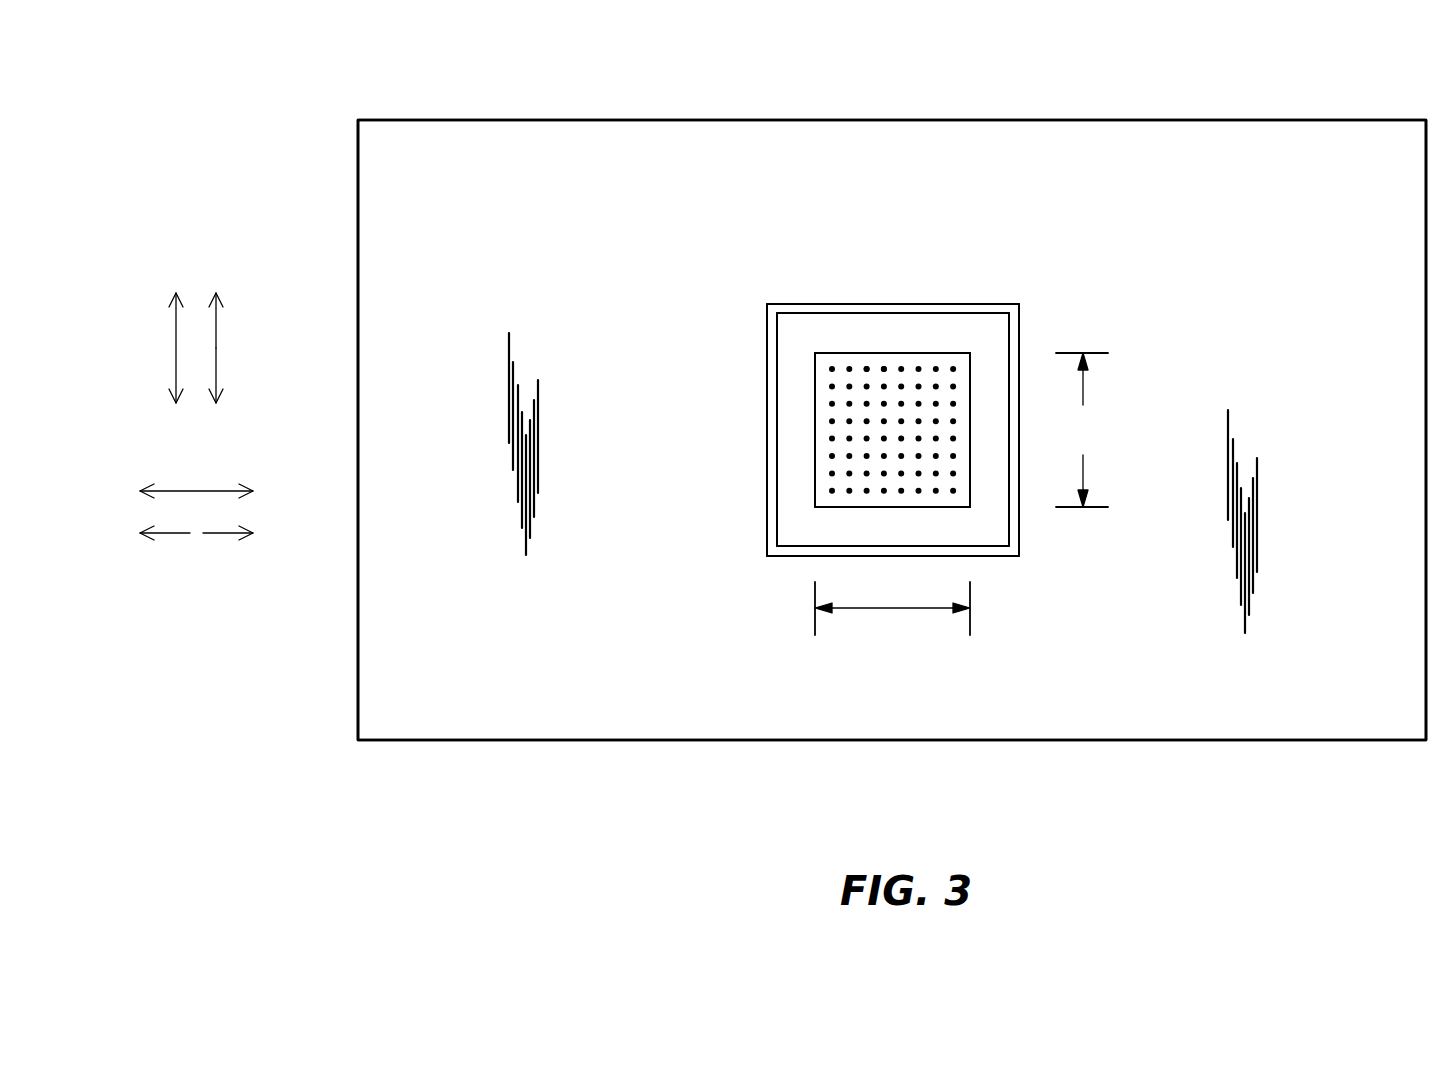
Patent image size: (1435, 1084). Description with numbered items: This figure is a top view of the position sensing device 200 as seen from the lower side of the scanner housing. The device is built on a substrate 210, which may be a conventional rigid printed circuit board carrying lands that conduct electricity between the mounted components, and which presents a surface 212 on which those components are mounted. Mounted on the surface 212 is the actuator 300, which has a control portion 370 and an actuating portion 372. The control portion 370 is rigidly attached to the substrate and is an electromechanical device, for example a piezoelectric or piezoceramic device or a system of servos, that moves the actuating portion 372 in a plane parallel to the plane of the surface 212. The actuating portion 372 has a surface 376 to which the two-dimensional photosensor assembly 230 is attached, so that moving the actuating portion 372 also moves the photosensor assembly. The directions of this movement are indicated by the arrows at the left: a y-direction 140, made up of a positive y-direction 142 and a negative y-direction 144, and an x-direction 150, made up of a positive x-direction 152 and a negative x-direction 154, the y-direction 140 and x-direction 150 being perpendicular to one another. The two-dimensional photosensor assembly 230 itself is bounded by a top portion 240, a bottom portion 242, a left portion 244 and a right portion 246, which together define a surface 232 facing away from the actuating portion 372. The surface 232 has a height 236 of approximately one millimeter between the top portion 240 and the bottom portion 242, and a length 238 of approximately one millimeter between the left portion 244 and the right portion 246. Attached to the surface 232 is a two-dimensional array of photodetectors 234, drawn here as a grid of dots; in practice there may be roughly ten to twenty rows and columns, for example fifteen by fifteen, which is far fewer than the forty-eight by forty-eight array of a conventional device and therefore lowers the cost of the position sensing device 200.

The position sensing device 200 is at (1153, 93).
The substrate 210 is at (358, 172).
The surface 212 is at (518, 241).
The y-direction 140 is at (176, 345).
The positive y-direction 142 is at (216, 328).
The negative y-direction 144 is at (216, 365).
The x-direction 150 is at (193, 490).
The positive x-direction 152 is at (215, 535).
The negative x-direction 154 is at (178, 535).
The actuator 300 is at (793, 302).
The control portion 370 is at (1003, 304).
The actuating portion 372 is at (777, 333).
The surface 376 is at (797, 524).
The two-dimensional photosensor assembly 230 is at (815, 497).
The surface 232 is at (823, 466).
The photodetectors 234 is at (867, 369).
The height 236 is at (1083, 430).
The length 238 is at (893, 609).
The top portion 240 is at (930, 352).
The bottom portion 242 is at (950, 510).
The left portion 244 is at (815, 387).
The right portion 246 is at (970, 378).